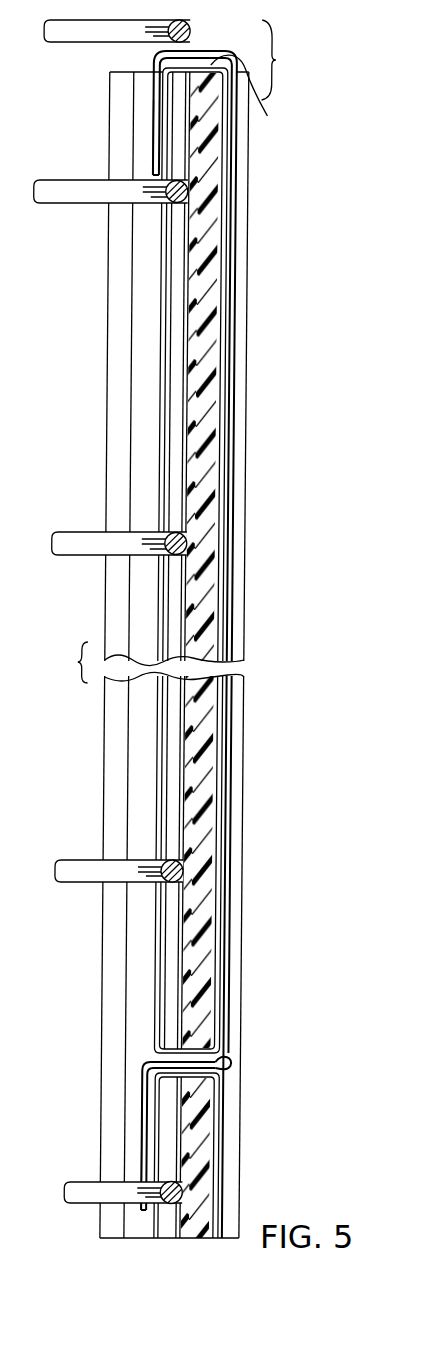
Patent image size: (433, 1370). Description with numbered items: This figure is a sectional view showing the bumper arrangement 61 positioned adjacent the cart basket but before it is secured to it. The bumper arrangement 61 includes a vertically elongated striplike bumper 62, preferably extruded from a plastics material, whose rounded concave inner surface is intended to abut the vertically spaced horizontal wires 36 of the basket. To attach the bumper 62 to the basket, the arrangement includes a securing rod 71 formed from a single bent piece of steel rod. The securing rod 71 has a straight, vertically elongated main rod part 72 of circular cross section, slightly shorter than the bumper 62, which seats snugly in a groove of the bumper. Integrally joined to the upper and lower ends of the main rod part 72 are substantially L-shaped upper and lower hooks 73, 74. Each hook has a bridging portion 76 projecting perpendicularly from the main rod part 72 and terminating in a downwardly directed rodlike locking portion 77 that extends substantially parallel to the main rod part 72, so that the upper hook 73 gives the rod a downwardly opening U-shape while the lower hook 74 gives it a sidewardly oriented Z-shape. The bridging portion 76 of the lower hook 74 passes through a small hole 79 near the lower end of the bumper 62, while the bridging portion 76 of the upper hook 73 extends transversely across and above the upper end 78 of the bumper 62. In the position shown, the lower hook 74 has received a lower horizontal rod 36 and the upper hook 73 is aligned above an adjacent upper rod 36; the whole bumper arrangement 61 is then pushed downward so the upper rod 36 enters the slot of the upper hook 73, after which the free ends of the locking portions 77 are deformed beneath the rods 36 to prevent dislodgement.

The horizontal wires 36 is at (73, 36).
The bumper arrangement 61 is at (258, 392).
The bumper 62 is at (202, 590).
The securing rod 71 is at (240, 467).
The main rod part 72 is at (224, 513).
The upper hook 73 is at (213, 46).
The lower hook 74 is at (146, 1058).
The bridging portion 76 is at (178, 57).
The locking portion 77 is at (157, 127).
The upper end 78 is at (254, 78).
The hole 79 is at (236, 1065).